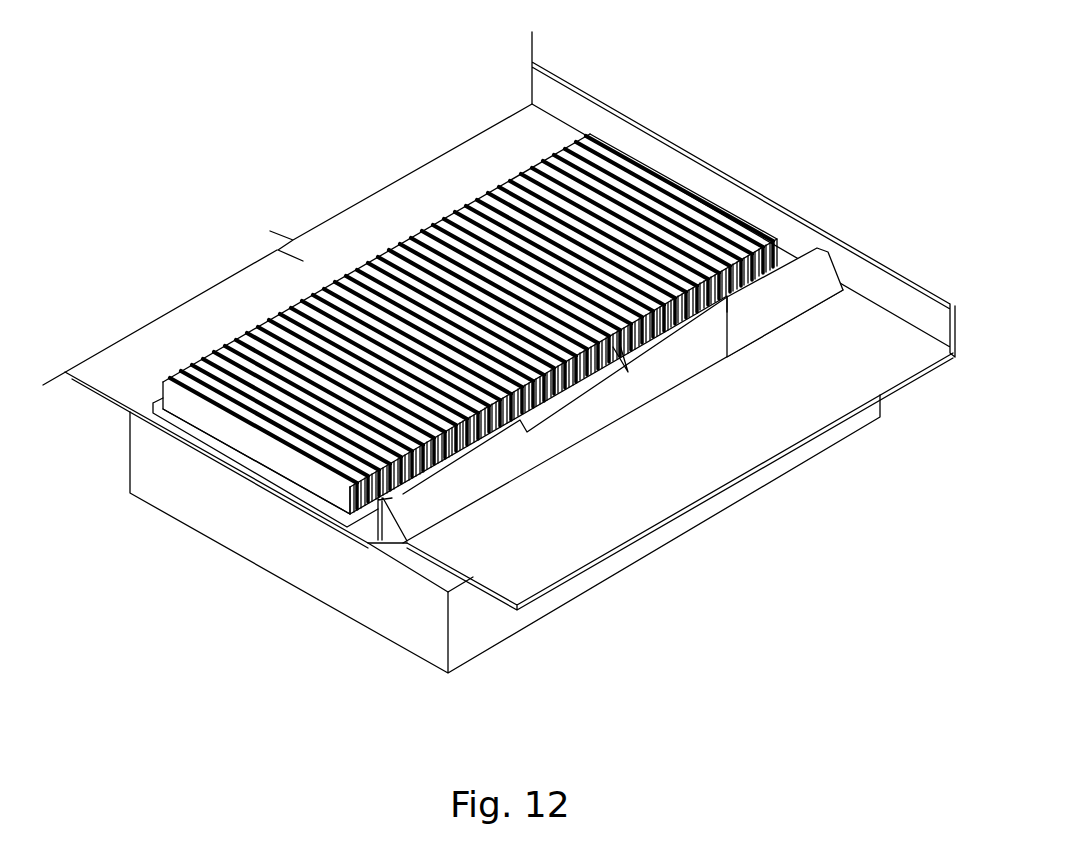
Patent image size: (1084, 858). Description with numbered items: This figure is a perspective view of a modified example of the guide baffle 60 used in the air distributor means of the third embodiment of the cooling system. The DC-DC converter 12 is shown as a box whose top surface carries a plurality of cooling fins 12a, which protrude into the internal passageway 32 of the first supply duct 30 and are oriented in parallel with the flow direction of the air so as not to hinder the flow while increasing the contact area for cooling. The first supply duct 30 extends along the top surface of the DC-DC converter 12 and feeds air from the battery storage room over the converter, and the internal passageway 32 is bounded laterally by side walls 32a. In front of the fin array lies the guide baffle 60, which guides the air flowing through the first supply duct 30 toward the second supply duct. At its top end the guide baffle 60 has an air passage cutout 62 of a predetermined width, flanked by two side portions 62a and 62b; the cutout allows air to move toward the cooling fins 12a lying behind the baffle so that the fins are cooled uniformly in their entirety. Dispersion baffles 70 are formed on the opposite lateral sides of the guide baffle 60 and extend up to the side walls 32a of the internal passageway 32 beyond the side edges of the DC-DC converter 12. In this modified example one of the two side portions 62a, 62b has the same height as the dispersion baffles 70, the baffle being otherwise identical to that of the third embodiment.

The DC-DC converter 12 is at (352, 579).
The cooling fins 12a is at (250, 443).
The first supply duct 30 is at (573, 80).
The internal passageway 32 is at (440, 183).
The side walls 32a is at (812, 238).
The guide baffle 60 is at (583, 488).
The air passage cutout 62 is at (577, 397).
The side portion 62a is at (388, 262).
The side portion 62b is at (720, 268).
The dispersion baffles 70 is at (470, 551).